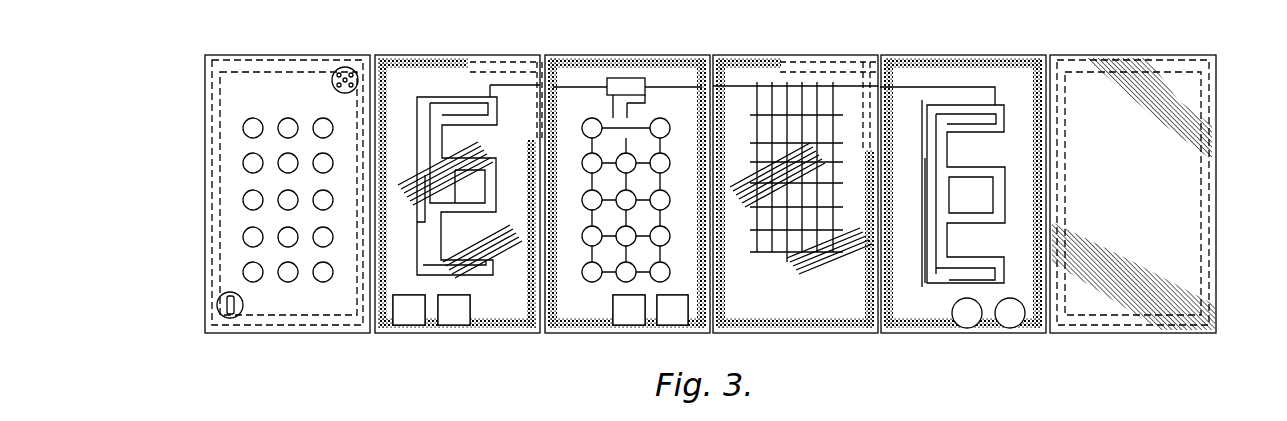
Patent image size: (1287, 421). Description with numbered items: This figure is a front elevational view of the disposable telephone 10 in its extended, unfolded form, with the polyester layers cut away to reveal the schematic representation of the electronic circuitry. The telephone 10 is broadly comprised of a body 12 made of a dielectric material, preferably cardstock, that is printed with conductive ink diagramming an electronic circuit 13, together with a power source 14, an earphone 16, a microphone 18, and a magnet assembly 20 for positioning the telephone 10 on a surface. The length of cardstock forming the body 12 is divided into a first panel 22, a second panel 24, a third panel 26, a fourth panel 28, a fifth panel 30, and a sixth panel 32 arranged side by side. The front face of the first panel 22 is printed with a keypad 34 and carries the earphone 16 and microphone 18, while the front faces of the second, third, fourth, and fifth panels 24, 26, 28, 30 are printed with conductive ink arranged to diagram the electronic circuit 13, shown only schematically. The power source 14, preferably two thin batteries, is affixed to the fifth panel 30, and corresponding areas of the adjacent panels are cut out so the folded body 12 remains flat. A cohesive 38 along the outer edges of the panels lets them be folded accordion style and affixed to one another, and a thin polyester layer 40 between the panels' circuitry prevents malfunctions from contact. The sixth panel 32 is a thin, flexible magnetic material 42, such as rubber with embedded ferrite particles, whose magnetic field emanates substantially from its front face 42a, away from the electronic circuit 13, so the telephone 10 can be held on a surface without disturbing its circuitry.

The disposable telephone 10 is at (172, 53).
The body 12 is at (250, 78).
The first panel 22 is at (308, 80).
The earphone 16 is at (346, 67).
The thin polyester layer 40 is at (413, 80).
The cohesive 38 is at (545, 147).
The second panel 24 is at (508, 80).
The third panel 26 is at (567, 80).
The fourth panel 28 is at (842, 78).
The fifth panel 30 is at (908, 78).
The sixth panel 32 is at (1090, 68).
The front face of the magnetic material 42a is at (1162, 70).
The magnetic material 42 is at (1205, 138).
The magnet assembly 20 is at (1218, 291).
The keypad 34 is at (232, 208).
The microphone 18 is at (237, 311).
The electronic circuit 13 is at (588, 275).
The power source 14 is at (967, 328).